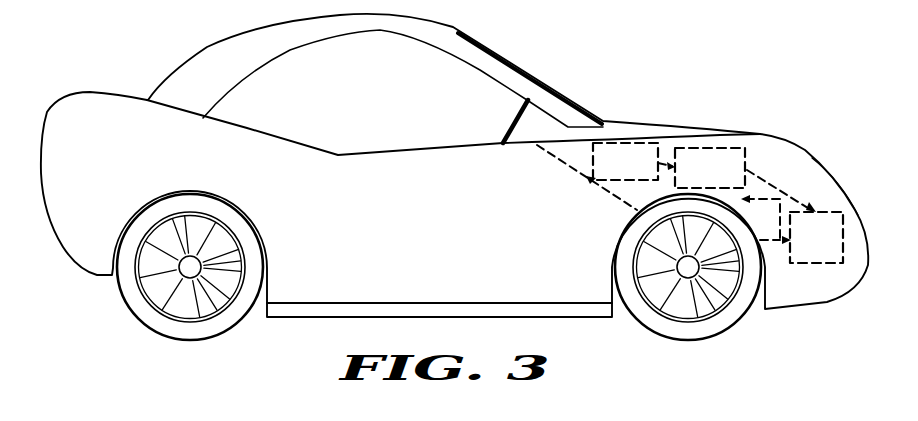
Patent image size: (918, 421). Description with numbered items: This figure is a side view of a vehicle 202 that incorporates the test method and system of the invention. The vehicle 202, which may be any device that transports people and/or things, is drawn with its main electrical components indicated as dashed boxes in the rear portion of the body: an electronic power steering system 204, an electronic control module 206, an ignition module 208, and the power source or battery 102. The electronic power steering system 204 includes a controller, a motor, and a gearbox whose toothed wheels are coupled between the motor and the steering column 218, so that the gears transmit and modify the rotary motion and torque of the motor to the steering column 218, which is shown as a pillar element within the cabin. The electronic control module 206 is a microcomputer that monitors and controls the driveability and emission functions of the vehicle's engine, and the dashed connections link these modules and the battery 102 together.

The battery 102 is at (833, 251).
The vehicle 202 is at (127, 162).
The electronic power steering system 204 is at (647, 172).
The electronic control module 206 is at (732, 178).
The ignition module 208 is at (785, 200).
The steering column 218 is at (514, 145).